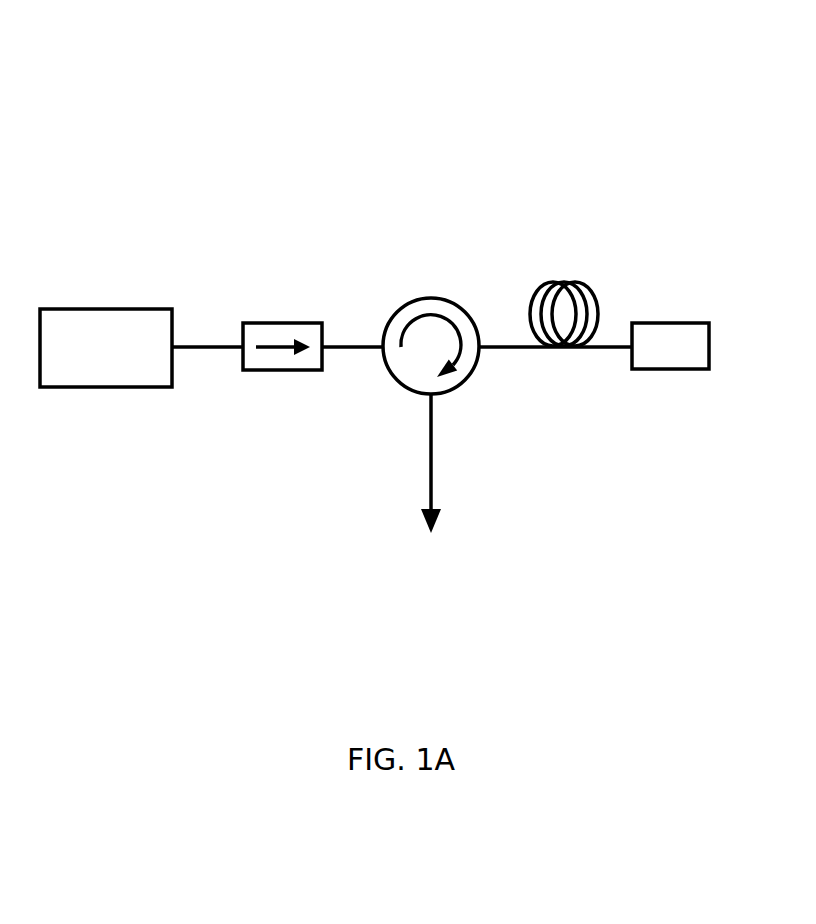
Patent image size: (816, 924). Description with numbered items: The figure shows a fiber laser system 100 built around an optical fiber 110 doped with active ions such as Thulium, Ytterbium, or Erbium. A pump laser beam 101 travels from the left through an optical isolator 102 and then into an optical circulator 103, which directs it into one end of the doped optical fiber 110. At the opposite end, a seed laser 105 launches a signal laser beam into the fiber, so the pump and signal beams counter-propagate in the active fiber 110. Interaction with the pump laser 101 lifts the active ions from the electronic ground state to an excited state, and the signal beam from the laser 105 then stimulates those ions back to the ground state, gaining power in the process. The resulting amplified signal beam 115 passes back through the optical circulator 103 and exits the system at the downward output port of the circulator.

The fiber laser system 100 is at (156, 121).
The pump laser beam 101 is at (103, 308).
The optical isolator 102 is at (280, 322).
The optical circulator 103 is at (430, 297).
The optical fiber 110 is at (558, 275).
The signal laser 105 is at (670, 372).
The amplified signal beam 115 is at (420, 444).